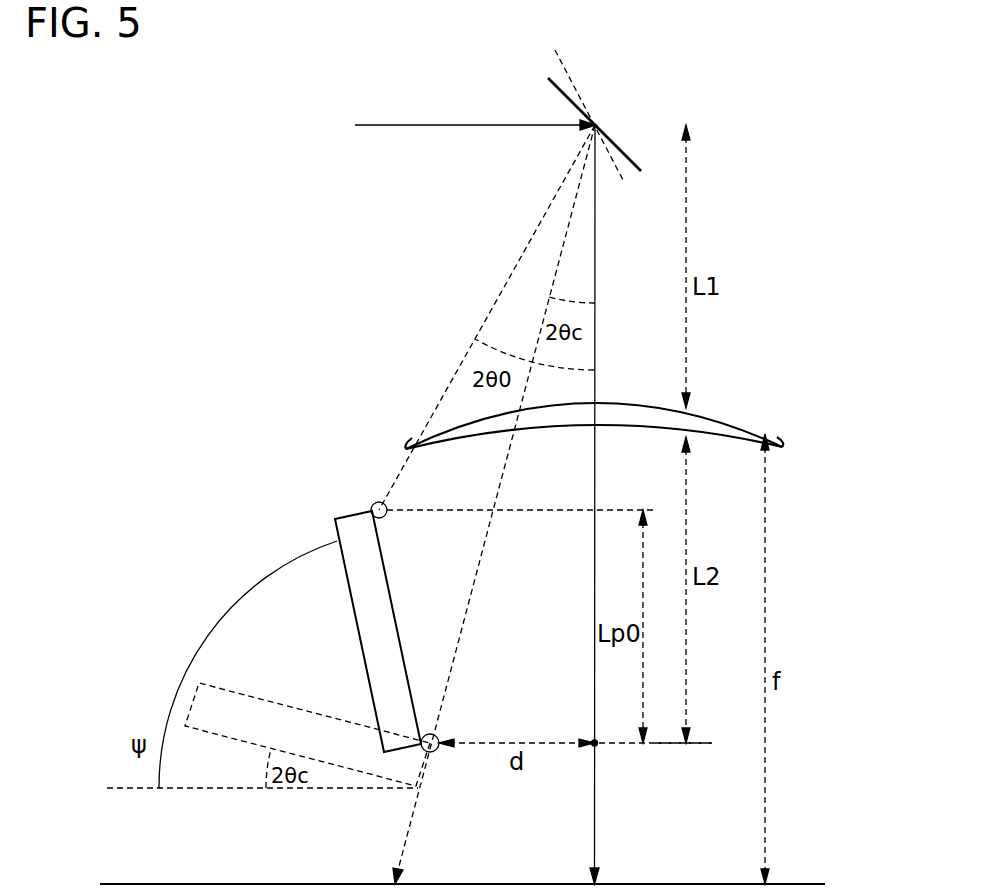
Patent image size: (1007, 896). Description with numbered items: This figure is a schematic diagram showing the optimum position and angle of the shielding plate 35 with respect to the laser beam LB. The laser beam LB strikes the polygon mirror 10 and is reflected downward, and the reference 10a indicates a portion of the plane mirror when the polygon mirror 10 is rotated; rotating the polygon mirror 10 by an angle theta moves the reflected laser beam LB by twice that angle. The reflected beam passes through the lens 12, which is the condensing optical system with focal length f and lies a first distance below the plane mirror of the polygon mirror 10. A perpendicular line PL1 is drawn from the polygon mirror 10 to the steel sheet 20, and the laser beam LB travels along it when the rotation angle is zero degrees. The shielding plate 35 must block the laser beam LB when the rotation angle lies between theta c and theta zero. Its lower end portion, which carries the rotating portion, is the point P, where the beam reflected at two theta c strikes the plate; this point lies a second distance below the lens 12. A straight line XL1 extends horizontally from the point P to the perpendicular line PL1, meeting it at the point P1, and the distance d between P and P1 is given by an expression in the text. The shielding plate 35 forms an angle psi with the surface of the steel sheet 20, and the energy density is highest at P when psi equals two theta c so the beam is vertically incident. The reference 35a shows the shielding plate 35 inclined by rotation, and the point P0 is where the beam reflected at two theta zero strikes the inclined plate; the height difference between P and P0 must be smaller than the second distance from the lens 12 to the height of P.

The polygon mirror 10 is at (566, 96).
The portion of the plane mirror 10a is at (563, 55).
The lens 12 is at (732, 413).
The steel sheet 20 is at (808, 884).
The shielding plate 35 is at (385, 599).
The shielding plate when inclined by rotation 35a is at (250, 694).
The laser beam LB is at (399, 125).
The perpendicular line PL1 is at (596, 832).
The intersection point P1 is at (597, 747).
The straight line XL1 is at (696, 745).
The irradiation point at angle two theta zero P0 is at (397, 519).
The irradiation point at angle two theta c P is at (421, 729).